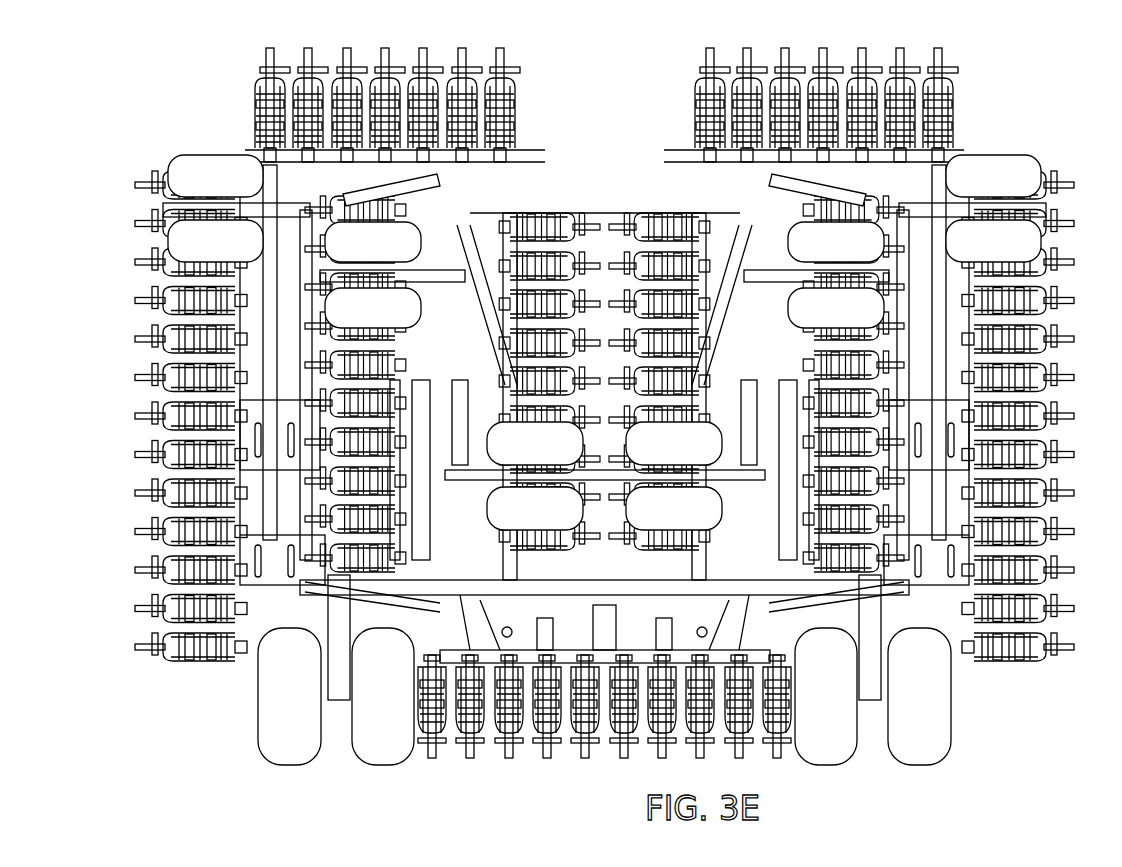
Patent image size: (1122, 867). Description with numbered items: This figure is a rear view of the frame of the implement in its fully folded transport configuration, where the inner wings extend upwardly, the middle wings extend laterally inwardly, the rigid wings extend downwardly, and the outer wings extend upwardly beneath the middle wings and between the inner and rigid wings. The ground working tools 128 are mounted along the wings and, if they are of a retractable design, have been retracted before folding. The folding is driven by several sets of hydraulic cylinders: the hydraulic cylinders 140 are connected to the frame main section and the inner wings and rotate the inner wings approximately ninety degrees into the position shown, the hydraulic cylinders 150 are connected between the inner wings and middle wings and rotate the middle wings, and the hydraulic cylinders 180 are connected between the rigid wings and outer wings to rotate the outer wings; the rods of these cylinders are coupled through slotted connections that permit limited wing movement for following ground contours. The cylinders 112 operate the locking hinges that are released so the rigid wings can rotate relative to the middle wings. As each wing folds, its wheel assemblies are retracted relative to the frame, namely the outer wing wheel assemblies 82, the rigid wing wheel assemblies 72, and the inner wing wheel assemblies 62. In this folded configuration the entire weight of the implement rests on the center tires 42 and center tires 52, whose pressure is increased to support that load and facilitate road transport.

The ground working tools 128 is at (350, 54).
The inner wing wheel assemblies 62 is at (168, 240).
The cylinders 112 is at (452, 217).
The outer wing wheel assemblies 82 is at (385, 251).
The hydraulic cylinders 150 is at (306, 315).
The rigid wing wheel assemblies 72 is at (572, 452).
The hydraulic cylinders 180 is at (462, 437).
The hydraulic cylinders 140 is at (379, 588).
The center tires 52 is at (378, 752).
The center tires 42 is at (905, 762).